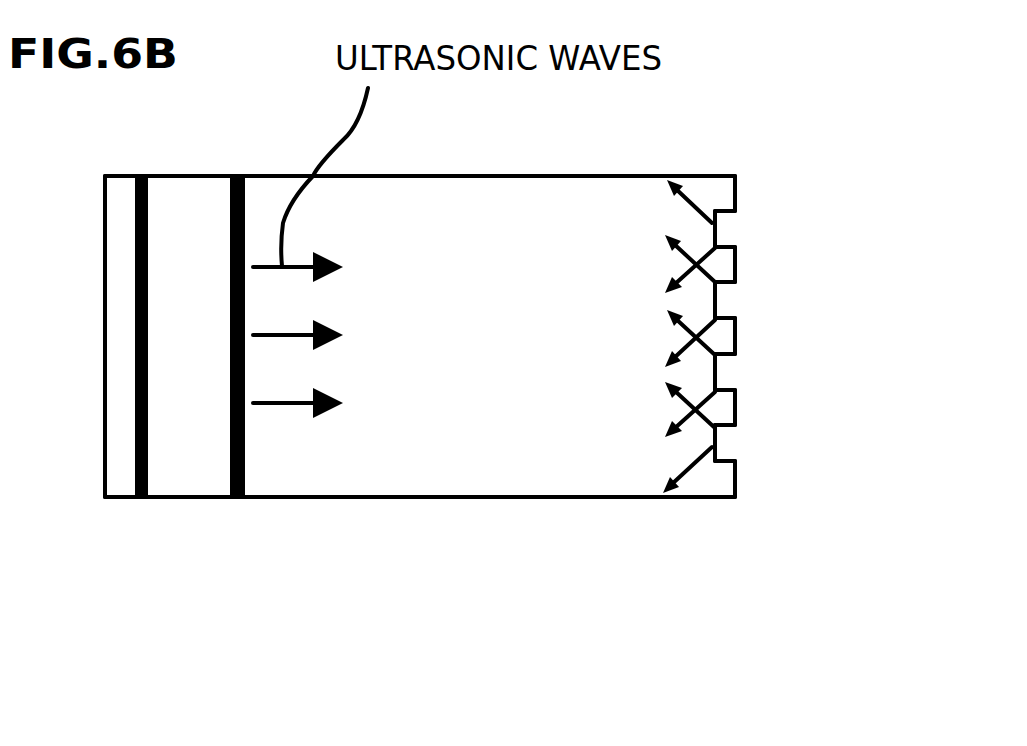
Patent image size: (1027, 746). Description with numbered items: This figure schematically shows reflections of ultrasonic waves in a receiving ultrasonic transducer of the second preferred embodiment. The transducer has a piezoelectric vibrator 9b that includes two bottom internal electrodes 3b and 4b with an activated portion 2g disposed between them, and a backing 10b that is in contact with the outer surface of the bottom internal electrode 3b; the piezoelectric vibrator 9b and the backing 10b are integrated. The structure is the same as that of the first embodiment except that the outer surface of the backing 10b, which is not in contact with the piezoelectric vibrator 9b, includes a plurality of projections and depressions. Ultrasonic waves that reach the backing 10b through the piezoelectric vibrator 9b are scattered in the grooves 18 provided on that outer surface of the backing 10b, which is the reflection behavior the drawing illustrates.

The backing 10b is at (460, 468).
The grooves 18 is at (735, 305).
The piezoelectric vibrator 9b is at (338, 603).
The bottom internal electrode 4b is at (135, 472).
The activated portion 2g is at (185, 472).
The bottom internal electrode 3b is at (245, 430).